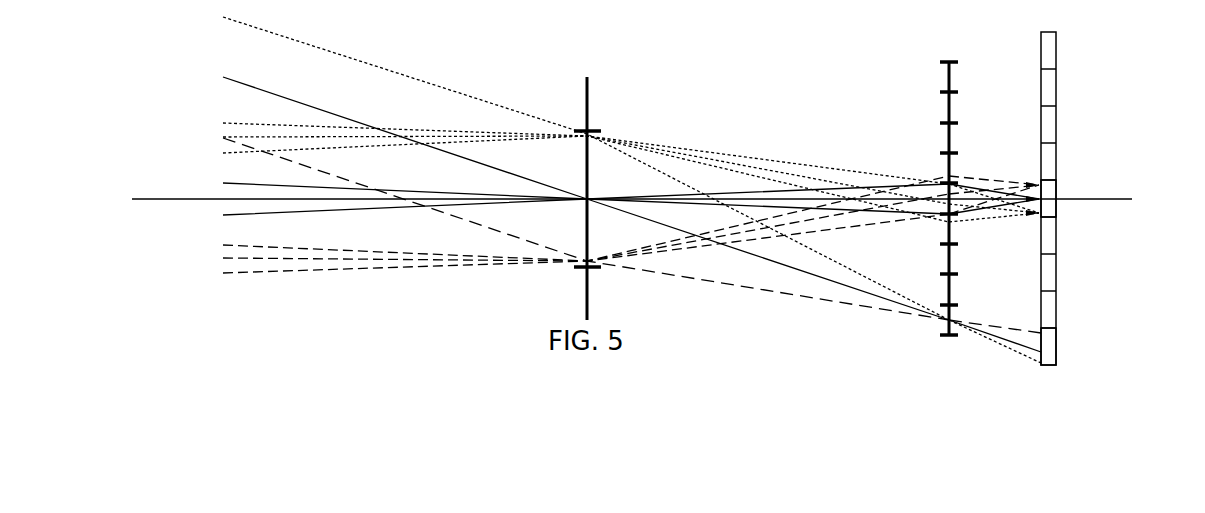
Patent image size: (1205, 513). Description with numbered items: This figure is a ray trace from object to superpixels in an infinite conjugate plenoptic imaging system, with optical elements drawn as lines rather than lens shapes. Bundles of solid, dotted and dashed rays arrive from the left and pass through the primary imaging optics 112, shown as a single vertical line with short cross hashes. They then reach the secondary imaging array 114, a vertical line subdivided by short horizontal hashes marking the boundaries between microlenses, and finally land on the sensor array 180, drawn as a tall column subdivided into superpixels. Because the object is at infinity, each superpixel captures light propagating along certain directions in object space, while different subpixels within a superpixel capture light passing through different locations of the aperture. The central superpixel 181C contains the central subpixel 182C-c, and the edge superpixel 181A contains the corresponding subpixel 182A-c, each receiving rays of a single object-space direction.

The primary imaging optics 112 is at (623, 85).
The secondary imaging array 114 is at (962, 56).
The sensor array 180 is at (1060, 28).
The central superpixel 181C is at (1046, 190).
The central subpixel of central superpixel 182C-c is at (1052, 198).
The edge superpixel 181A is at (1046, 338).
The central subpixel of edge superpixel 182A-c is at (1056, 353).